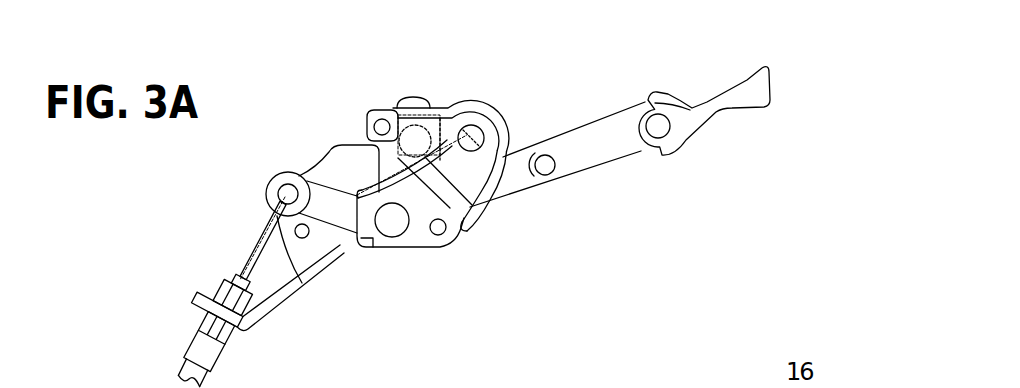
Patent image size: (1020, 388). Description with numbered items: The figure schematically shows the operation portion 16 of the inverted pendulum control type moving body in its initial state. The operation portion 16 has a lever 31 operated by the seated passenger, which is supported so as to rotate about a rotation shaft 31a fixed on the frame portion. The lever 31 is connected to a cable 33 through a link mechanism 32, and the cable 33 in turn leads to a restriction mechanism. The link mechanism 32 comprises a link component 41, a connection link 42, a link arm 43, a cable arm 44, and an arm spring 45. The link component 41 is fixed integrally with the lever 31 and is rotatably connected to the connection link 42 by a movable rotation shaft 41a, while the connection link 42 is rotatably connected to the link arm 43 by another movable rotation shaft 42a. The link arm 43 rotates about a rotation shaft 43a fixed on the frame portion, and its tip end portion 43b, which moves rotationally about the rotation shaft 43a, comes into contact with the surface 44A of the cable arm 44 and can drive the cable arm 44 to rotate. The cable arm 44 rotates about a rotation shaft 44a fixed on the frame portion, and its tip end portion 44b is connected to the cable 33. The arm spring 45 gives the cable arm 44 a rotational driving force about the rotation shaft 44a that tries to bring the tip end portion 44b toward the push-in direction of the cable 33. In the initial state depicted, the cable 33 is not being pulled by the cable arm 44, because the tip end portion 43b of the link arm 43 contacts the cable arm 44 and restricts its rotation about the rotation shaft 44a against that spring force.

The operation portion 16 is at (755, 57).
The lever 31 is at (767, 83).
The rotation shaft 31a is at (670, 127).
The link mechanism 32 is at (293, 103).
The cable 33 is at (258, 241).
The link component 41 is at (607, 152).
The movable rotation shaft 41a is at (546, 167).
The connection link 42 is at (503, 180).
The movable rotation shaft 42a is at (425, 248).
The link arm 43 is at (434, 106).
The rotation shaft 43a is at (474, 136).
The tip end portion 43b is at (385, 119).
The cable arm 44 is at (324, 180).
The surface 44A is at (367, 145).
The rotation shaft 44a is at (392, 224).
The tip end portion 44b is at (265, 191).
The arm spring 45 is at (473, 138).